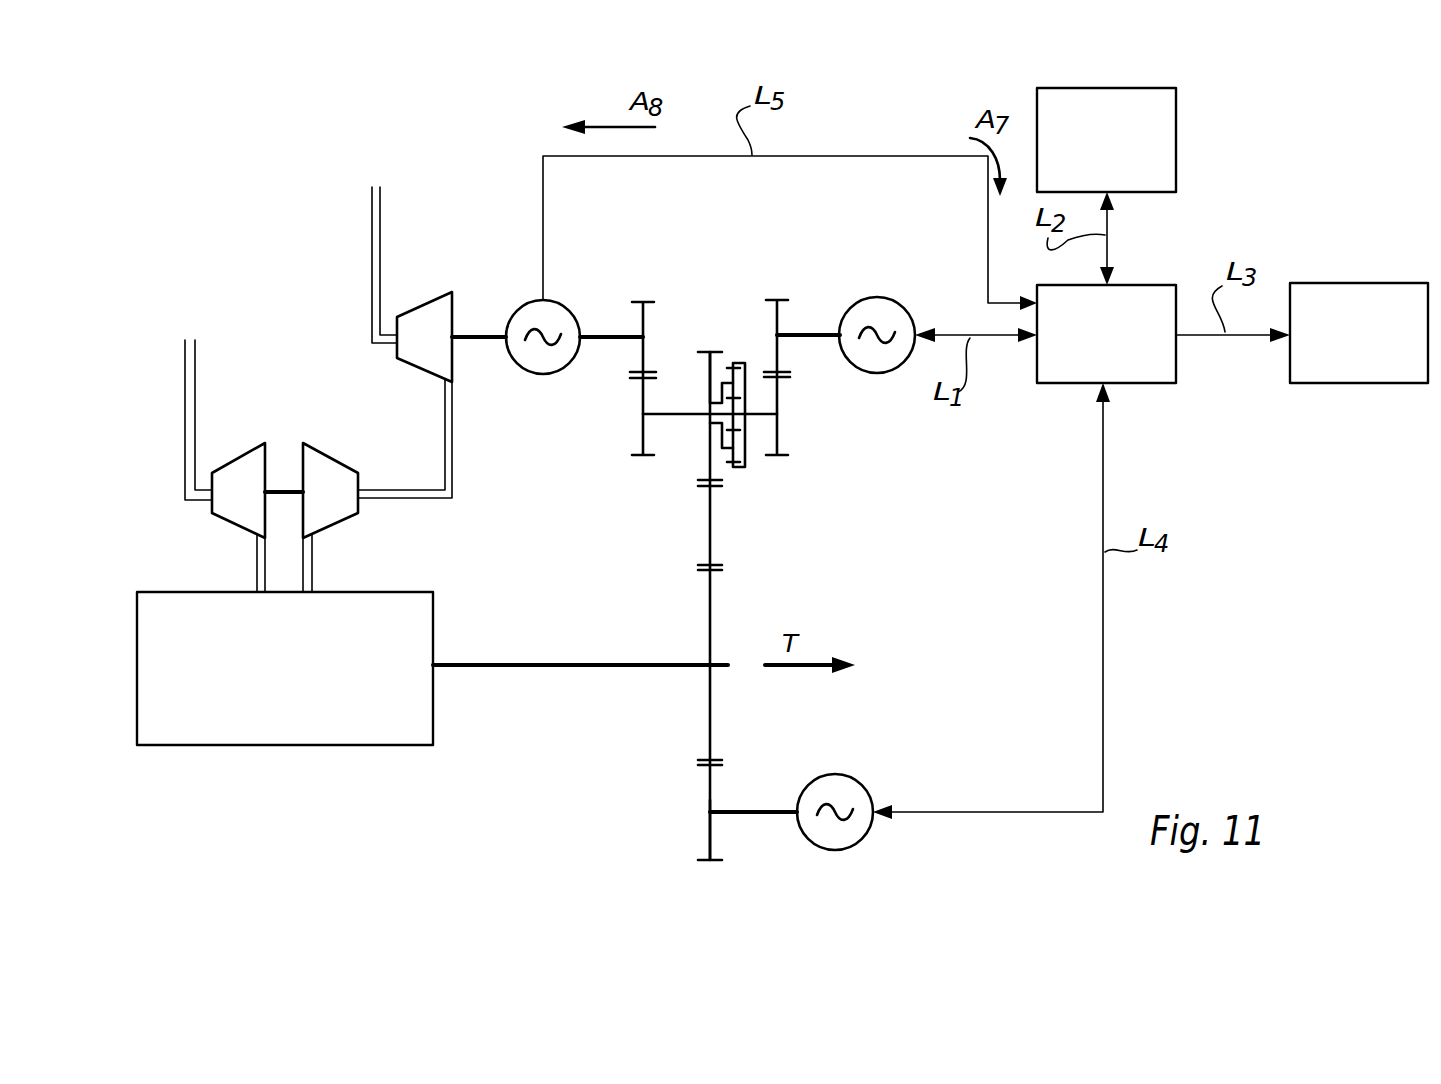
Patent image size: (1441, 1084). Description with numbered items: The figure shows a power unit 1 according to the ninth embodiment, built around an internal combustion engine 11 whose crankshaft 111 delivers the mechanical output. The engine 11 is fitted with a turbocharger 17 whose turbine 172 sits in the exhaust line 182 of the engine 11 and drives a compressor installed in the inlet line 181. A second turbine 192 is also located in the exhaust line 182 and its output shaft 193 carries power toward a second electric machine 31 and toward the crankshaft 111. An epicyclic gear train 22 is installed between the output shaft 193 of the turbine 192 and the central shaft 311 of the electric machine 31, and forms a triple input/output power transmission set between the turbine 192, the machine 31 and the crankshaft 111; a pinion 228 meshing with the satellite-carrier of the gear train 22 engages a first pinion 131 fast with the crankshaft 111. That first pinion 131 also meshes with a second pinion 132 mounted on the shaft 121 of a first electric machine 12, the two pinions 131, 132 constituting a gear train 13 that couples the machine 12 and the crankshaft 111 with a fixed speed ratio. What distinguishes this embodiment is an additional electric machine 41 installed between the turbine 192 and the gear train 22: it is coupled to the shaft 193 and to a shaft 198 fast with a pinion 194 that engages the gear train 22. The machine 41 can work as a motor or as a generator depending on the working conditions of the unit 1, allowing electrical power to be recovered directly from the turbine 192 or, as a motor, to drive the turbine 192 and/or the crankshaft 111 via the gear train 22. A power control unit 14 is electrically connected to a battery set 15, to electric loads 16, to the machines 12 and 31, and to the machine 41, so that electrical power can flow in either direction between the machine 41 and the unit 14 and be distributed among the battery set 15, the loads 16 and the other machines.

The power unit 1 is at (257, 310).
The internal combustion engine 11 is at (285, 668).
The first electric machine 12 is at (830, 785).
The gear train 13 is at (645, 794).
The power control unit 14 is at (1106, 334).
The battery set 15 is at (1106, 140).
The electric loads 16 is at (1359, 333).
The turbocharger 17 is at (323, 489).
The epicyclic gear train 22 is at (704, 322).
The second electric machine 31 is at (872, 360).
The additional electric machine 41 is at (563, 318).
The crankshaft 111 is at (647, 665).
The shaft 121 is at (768, 815).
The first pinion 131 is at (709, 728).
The second pinion 132 is at (708, 840).
The turbine 172 is at (333, 510).
The inlet line 181 is at (185, 383).
The exhaust line 182 is at (445, 432).
The second turbine 192 is at (430, 318).
The output shaft 193 is at (482, 339).
The pinion 194 is at (644, 313).
The shaft 198 is at (606, 339).
The pinion 228 is at (712, 540).
The central shaft 311 is at (802, 330).